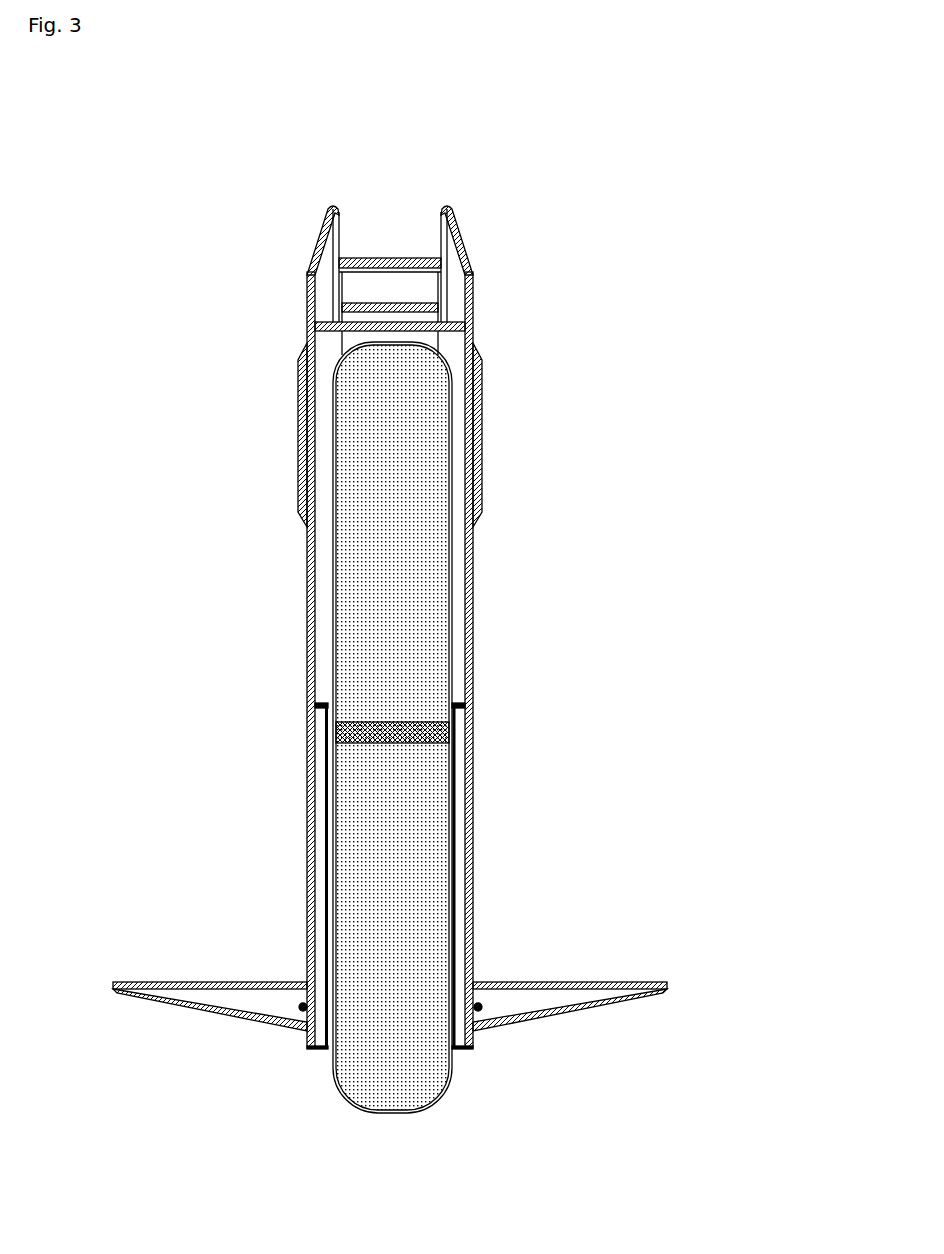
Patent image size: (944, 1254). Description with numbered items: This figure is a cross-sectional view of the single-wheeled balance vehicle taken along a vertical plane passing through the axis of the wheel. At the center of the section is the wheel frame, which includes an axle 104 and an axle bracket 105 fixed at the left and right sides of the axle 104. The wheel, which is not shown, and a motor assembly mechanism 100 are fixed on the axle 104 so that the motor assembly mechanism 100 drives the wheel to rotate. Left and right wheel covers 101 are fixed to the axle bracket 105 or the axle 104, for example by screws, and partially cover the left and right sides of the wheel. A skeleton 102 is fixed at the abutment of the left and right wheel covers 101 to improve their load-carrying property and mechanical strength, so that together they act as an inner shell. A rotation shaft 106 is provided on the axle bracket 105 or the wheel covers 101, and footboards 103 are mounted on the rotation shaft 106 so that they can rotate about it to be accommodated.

The motor assembly mechanism 100 is at (477, 727).
The wheel covers 101 is at (369, 393).
The skeleton 102 is at (398, 322).
The footboards 103 is at (210, 896).
The axle 104 is at (442, 615).
The axle bracket 105 is at (348, 786).
The rotation shaft 106 is at (570, 905).